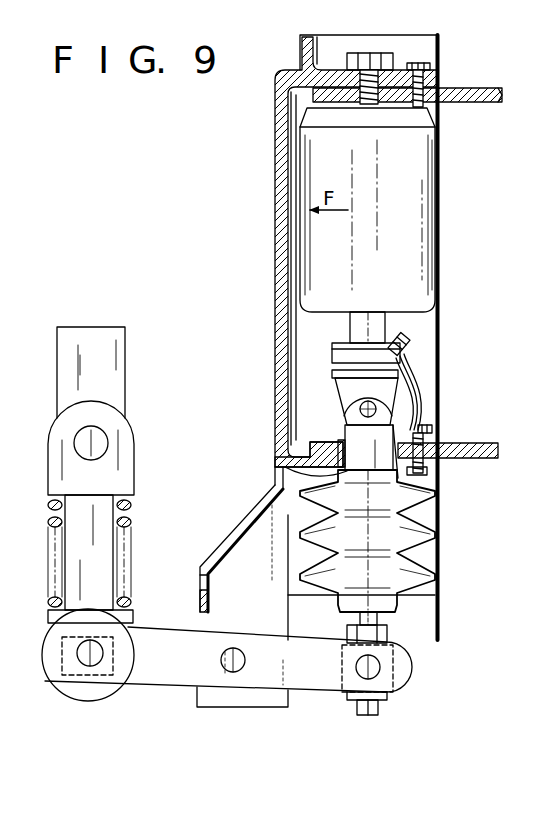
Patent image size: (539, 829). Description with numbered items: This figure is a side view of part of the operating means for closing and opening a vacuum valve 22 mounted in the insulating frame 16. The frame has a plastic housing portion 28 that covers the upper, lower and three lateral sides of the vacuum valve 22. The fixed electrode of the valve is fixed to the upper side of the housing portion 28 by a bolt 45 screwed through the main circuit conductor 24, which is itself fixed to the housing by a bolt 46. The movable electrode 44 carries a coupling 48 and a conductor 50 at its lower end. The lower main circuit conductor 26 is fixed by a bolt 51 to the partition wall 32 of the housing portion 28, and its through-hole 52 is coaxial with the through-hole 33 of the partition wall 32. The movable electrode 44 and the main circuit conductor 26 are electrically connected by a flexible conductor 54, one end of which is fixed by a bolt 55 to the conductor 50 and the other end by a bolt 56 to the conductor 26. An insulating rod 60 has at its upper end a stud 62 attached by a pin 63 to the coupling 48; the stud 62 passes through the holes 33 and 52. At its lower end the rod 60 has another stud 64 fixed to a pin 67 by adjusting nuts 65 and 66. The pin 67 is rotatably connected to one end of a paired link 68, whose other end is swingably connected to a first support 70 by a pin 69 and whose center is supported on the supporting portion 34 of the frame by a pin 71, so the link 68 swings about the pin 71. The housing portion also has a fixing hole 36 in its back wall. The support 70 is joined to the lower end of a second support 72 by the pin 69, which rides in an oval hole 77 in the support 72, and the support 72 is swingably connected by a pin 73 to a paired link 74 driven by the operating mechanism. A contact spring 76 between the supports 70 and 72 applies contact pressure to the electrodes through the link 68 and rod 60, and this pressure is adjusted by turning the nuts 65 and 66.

The insulating frame 16 is at (262, 310).
The vacuum valve 22 is at (430, 215).
The main circuit conductor 24 is at (490, 90).
The main circuit conductor 26 is at (495, 458).
The housing portion 28 is at (275, 182).
The partition wall 32 is at (310, 462).
The through-hole 33 is at (300, 476).
The supporting portion 34 is at (250, 548).
The fixing hole 36 is at (208, 596).
The movable electrode 44 is at (387, 323).
The bolt 45 is at (372, 53).
The bolt 46 is at (430, 67).
The coupling 48 is at (342, 385).
The conductor 50 is at (333, 352).
The bolt 51 is at (427, 472).
The through-hole 52 is at (343, 440).
The flexible conductor 54 is at (414, 390).
The bolt 55 is at (408, 340).
The bolt 56 is at (432, 428).
The insulating rod 60 is at (435, 535).
The stud 62 is at (375, 462).
The pin 63 is at (360, 409).
The stud 64 is at (377, 617).
The adjusting nut 65 is at (347, 632).
The adjusting nut 66 is at (378, 705).
The pin 67 is at (382, 665).
The link 68 is at (318, 685).
The pin 69 is at (80, 655).
The first support 70 is at (85, 690).
The pin 71 is at (233, 672).
The second support 72 is at (105, 555).
The pin 73 is at (100, 445).
The link 74 is at (113, 362).
The contact spring 76 is at (133, 510).
The oval hole 77 is at (97, 638).